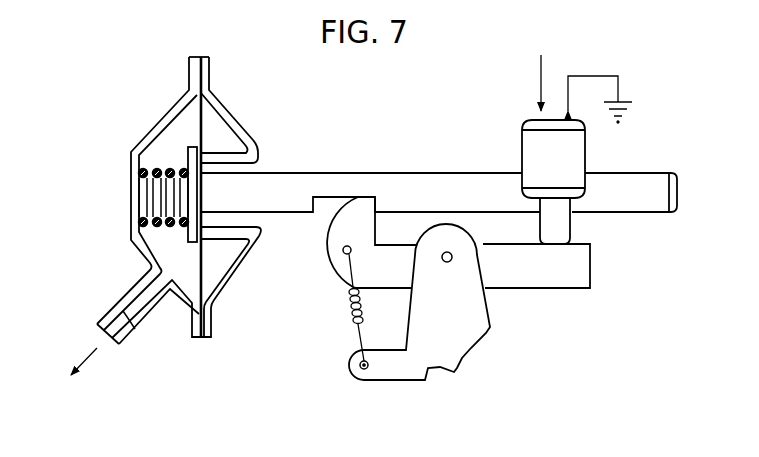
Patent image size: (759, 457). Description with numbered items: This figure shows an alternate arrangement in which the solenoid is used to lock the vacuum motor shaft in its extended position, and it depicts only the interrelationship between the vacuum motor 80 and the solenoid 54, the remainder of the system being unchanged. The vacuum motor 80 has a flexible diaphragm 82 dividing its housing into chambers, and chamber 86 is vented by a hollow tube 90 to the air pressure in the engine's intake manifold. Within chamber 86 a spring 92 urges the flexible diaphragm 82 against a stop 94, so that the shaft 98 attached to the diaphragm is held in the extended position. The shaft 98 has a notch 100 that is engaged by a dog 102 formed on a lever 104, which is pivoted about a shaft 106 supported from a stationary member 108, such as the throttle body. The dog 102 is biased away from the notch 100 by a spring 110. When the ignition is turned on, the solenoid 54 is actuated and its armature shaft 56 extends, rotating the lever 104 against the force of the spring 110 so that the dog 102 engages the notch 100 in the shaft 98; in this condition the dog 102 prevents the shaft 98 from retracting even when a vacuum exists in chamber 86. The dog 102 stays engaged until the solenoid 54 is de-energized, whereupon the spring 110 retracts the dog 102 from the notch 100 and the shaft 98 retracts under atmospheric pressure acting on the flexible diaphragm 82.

The solenoid 54 is at (573, 155).
The armature shaft 56 is at (562, 222).
The vacuum motor 80 is at (153, 53).
The flexible diaphragm 82 is at (201, 123).
The chamber 86 is at (177, 126).
The tube 90 is at (123, 335).
The spring 92 is at (143, 202).
The stop 94 is at (235, 154).
The shaft 98 is at (438, 190).
The notch 100 is at (330, 199).
The dog 102 is at (358, 222).
The lever 104 is at (543, 276).
The shaft 106 is at (447, 263).
The stationary member 108 is at (447, 352).
The spring 110 is at (351, 322).